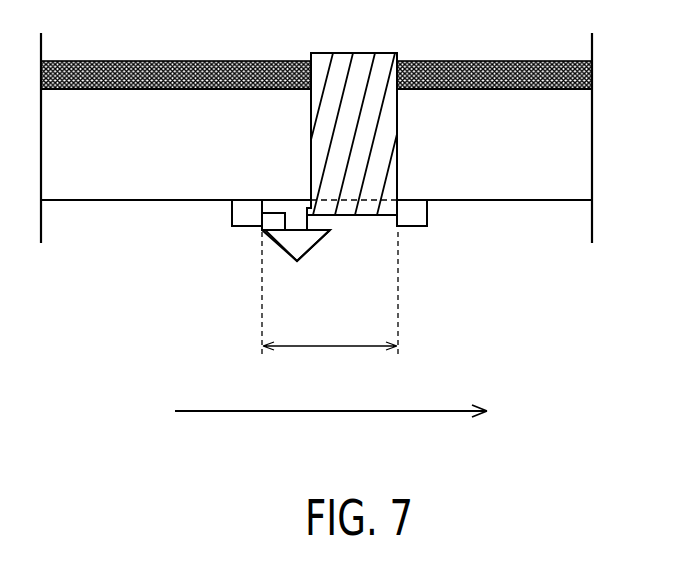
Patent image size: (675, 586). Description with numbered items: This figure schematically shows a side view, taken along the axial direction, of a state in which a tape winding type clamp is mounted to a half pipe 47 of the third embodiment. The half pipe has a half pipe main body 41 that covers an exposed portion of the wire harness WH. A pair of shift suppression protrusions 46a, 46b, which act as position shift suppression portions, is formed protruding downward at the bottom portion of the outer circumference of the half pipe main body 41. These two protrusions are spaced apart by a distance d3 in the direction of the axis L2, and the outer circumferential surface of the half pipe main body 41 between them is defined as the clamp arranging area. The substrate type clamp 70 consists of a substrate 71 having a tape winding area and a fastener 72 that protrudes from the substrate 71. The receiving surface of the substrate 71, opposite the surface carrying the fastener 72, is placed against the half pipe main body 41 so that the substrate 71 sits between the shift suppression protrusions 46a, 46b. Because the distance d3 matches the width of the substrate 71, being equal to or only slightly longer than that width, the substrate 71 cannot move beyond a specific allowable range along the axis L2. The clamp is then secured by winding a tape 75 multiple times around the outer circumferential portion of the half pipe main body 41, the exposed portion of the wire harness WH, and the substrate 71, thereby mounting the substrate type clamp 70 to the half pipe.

The half pipe main body 41 is at (525, 182).
The wire harness WH is at (526, 70).
The half pipe 47 is at (117, 207).
The tape 75 is at (362, 63).
The shift suppression protrusion 46a is at (233, 232).
The shift suppression protrusion 46b is at (420, 230).
The substrate type clamp 70 is at (338, 243).
The substrate 71 is at (367, 216).
The fastener 72 is at (298, 262).
The distance d3 is at (330, 348).
The axis L2 is at (329, 413).